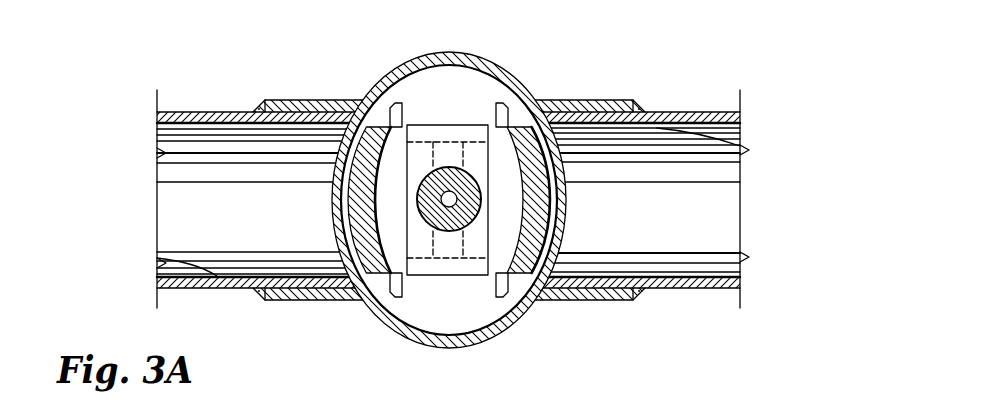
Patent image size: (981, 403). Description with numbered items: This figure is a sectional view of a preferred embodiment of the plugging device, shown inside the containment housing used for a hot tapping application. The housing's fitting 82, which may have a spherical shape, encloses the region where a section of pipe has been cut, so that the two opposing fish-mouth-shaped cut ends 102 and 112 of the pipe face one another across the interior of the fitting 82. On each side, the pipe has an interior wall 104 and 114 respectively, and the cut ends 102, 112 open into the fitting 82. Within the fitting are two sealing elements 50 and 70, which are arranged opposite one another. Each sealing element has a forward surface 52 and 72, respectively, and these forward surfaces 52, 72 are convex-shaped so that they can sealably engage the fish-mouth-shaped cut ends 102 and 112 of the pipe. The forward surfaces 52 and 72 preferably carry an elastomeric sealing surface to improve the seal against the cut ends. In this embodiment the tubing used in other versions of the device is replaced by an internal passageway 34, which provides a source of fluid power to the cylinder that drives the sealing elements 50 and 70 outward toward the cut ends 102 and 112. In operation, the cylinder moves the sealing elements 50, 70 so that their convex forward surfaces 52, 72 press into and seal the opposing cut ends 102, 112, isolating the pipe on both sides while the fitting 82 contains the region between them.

The internal passageway 34 is at (449, 192).
The sealing element 50 is at (366, 240).
The forward surface 52 is at (352, 198).
The sealing element 70 is at (528, 250).
The forward surface 72 is at (549, 210).
The fitting 82 is at (470, 348).
The cut end 102 is at (382, 103).
The interior wall 104 is at (163, 267).
The cut end 112 is at (513, 103).
The interior wall 114 is at (750, 145).